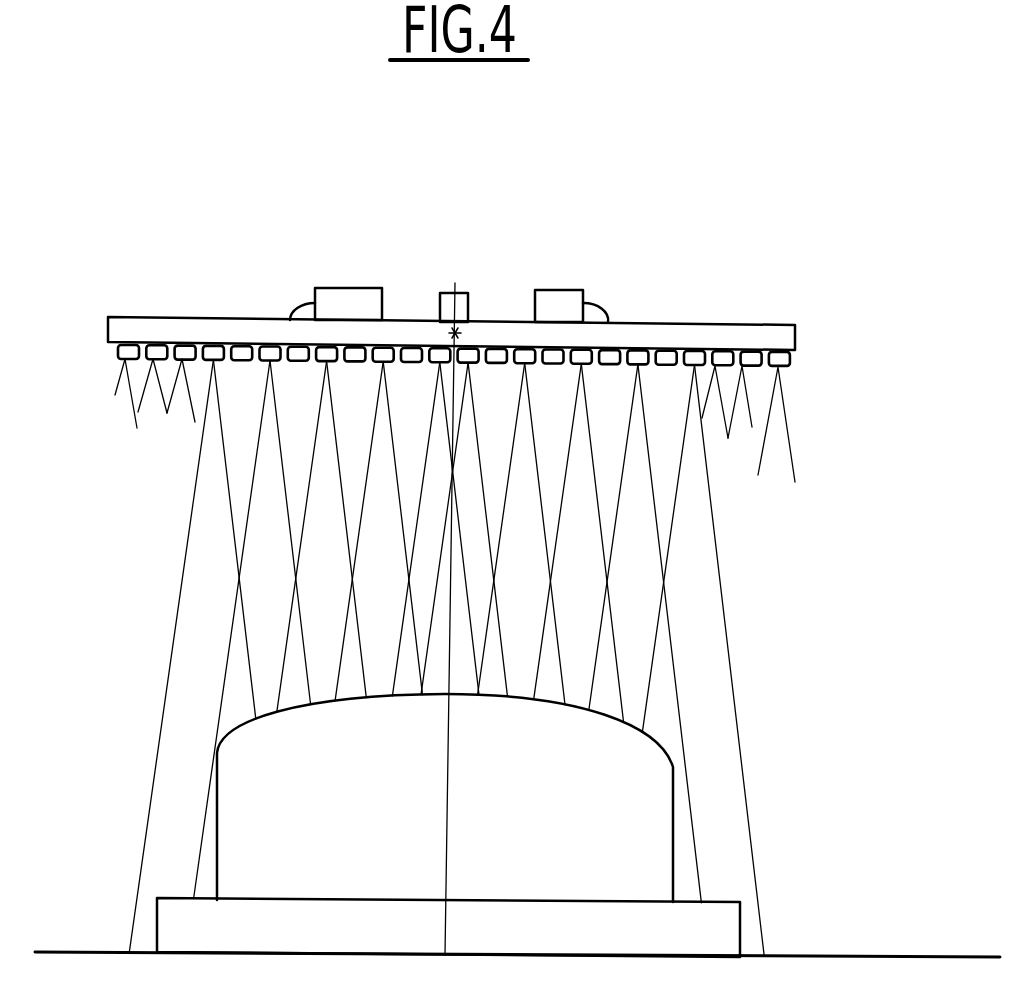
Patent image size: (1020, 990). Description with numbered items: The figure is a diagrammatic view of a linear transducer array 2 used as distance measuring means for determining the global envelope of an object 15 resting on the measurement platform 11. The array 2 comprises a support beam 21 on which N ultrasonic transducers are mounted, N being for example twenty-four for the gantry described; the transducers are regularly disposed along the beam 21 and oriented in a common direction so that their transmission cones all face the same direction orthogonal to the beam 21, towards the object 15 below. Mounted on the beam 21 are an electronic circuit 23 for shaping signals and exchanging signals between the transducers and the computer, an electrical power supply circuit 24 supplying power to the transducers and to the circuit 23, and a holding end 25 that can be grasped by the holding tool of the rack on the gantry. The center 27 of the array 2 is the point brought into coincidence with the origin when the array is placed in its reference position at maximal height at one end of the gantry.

The linear transducer array 2 is at (468, 329).
The support beam 21 is at (225, 330).
The electronic circuit 23 is at (565, 300).
The electrical power supply circuit 24 is at (330, 293).
The holding end 25 is at (440, 293).
The center of the array 27 is at (460, 333).
The object 15 is at (650, 797).
The measurement platform 11 is at (720, 930).